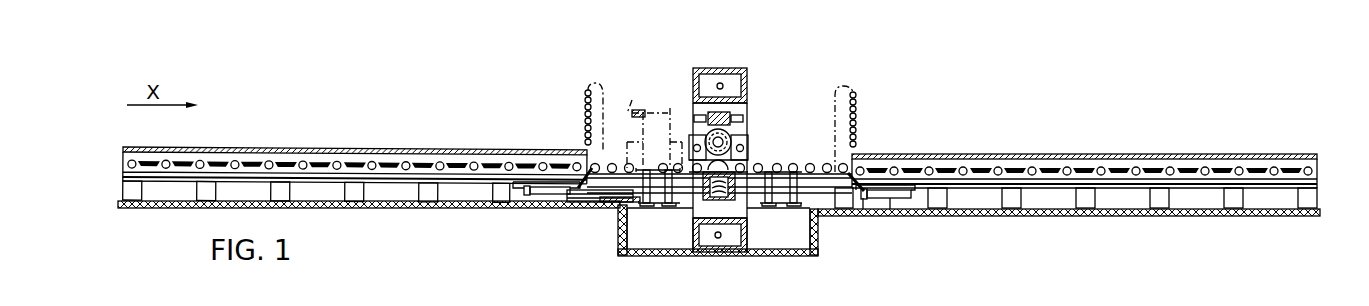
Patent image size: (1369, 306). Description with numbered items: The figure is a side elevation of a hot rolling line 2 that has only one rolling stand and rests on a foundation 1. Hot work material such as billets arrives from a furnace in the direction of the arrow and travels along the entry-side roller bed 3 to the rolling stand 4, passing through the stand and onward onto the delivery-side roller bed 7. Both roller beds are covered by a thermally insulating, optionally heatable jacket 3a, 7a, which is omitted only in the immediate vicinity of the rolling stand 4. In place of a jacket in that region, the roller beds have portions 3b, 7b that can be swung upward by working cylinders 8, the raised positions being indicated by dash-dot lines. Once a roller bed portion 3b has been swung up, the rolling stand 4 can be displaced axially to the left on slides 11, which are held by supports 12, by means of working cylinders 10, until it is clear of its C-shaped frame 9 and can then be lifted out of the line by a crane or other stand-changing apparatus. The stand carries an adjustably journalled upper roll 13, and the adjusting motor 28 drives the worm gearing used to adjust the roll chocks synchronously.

The floor / foundation 1 is at (457, 244).
The hot rolling line 2 is at (985, 100).
The roller bed 3 is at (408, 140).
The jacket 3a is at (323, 147).
The roller bed portion 3b is at (582, 126).
The rolling stand 4 is at (731, 114).
The roller bed 7 is at (1148, 149).
The jacket 7a is at (1062, 155).
The roller bed portion 7b is at (816, 172).
The working cylinders 8 is at (545, 194).
The C-shaped frame 9 is at (748, 71).
The working cylinders 10 is at (598, 203).
The slides 11 is at (655, 203).
The supports 12 is at (668, 203).
The upper roll 13 is at (735, 141).
The adjusting motor 28 is at (693, 115).